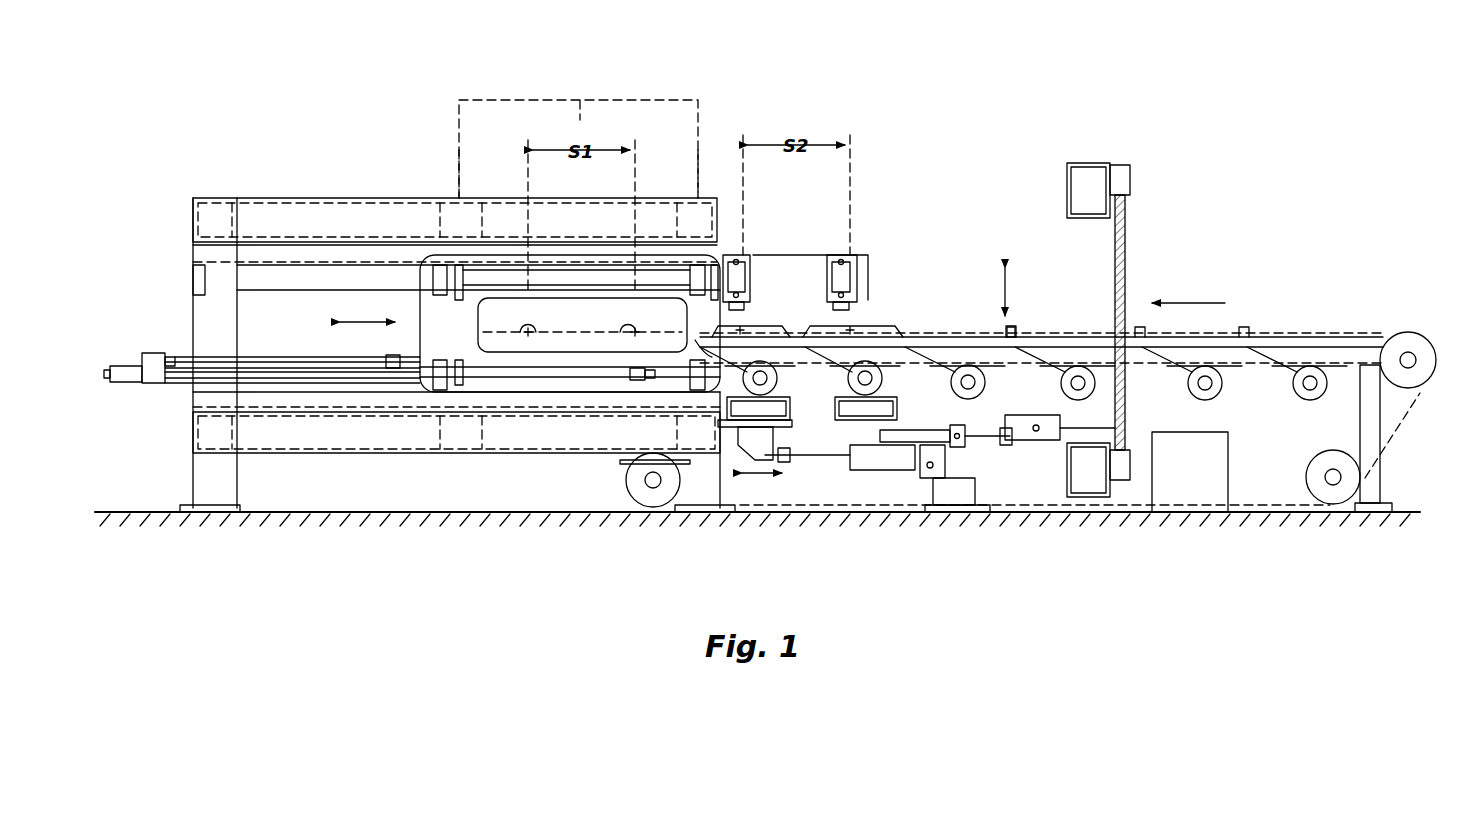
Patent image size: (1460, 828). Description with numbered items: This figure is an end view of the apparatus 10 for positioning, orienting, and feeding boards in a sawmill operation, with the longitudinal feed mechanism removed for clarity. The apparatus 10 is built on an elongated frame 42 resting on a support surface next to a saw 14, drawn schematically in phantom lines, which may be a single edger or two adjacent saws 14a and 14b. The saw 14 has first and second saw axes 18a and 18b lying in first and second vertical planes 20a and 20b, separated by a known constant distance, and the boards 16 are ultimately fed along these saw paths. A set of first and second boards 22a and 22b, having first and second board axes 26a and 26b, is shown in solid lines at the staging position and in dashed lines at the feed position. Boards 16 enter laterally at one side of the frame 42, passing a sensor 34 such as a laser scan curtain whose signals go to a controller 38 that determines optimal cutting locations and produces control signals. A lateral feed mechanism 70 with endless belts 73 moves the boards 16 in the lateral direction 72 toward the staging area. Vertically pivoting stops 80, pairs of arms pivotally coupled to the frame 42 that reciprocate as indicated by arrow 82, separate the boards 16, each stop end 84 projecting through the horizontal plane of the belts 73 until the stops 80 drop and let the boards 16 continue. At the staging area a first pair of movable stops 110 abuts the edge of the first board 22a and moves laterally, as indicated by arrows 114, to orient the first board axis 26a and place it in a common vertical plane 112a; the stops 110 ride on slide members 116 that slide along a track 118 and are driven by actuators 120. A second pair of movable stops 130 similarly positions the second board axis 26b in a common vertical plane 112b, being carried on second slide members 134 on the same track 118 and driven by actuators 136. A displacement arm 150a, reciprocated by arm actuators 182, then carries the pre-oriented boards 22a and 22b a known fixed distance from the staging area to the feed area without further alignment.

The apparatus 10 is at (312, 100).
The saw 14 is at (598, 97).
The first saw 14a is at (459, 153).
The second saw 14b is at (700, 145).
The boards 16 is at (872, 318).
The first saw axis 18a is at (527, 340).
The second saw axis 18b is at (628, 340).
The first vertical plane 20a is at (528, 186).
The second vertical plane 20b is at (635, 186).
The first board 22a is at (793, 323).
The second board 22b is at (890, 326).
The first board axis 26a is at (760, 255).
The second board axis 26b is at (855, 300).
The sensor 34 is at (1132, 182).
The controller 38 is at (1232, 462).
The elongated frame 42 is at (305, 441).
The lateral feed mechanism 70 is at (1068, 333).
The lateral direction 72 is at (1190, 303).
The endless belts 73 is at (1402, 415).
The stops 80 is at (1040, 375).
The arrow 82 is at (1010, 285).
The stop end 84 is at (1012, 328).
The first pair of movable stops 110 is at (700, 345).
The first common vertical plane 112a is at (743, 165).
The second common vertical plane 112b is at (850, 165).
The arrows 114 is at (758, 478).
The slide members 116 is at (788, 422).
The slide or track 118 is at (900, 422).
The actuators 120 is at (862, 420).
The second pair of movable stops 130 is at (810, 330).
The second slide members 134 is at (877, 442).
The actuators 136 is at (1020, 442).
The displacement arm 150a is at (470, 333).
The arm actuators 182 is at (272, 362).